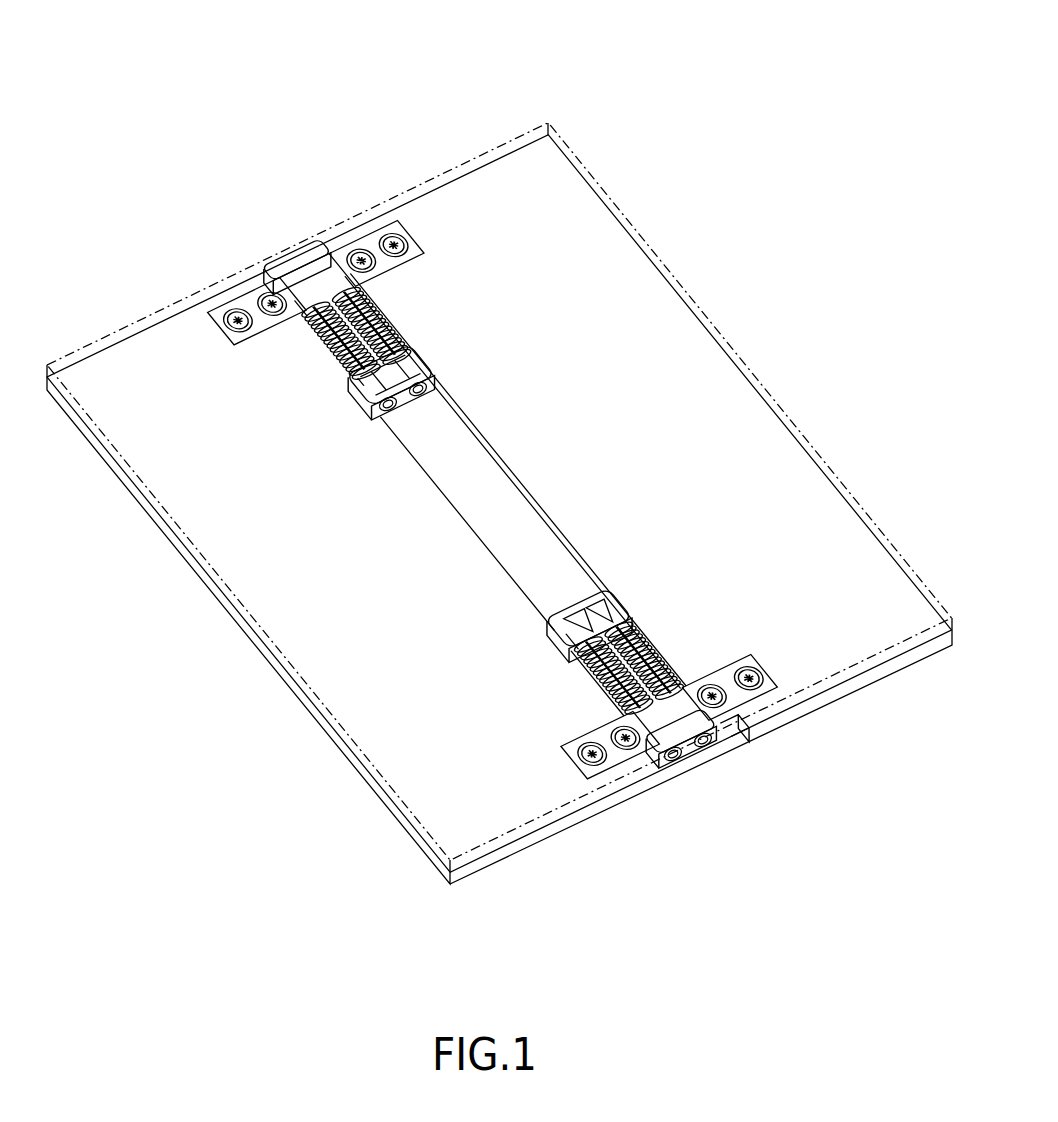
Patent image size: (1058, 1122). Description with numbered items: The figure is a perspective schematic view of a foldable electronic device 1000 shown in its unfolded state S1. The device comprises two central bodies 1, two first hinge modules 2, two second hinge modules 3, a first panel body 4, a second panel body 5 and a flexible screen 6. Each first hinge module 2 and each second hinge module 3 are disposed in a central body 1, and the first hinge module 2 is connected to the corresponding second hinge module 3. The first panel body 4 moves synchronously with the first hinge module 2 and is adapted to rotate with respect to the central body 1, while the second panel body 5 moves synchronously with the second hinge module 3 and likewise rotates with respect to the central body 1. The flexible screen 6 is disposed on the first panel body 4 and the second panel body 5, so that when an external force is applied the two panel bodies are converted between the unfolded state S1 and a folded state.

The foldable electronic device 1000 is at (378, 38).
The unfolded state S1 is at (620, 116).
The central body 1 is at (414, 411).
The first hinge module 2 is at (384, 318).
The second hinge module 3 is at (334, 358).
The first panel body 4 is at (605, 258).
The second panel body 5 is at (356, 777).
The flexible screen 6 is at (437, 172).